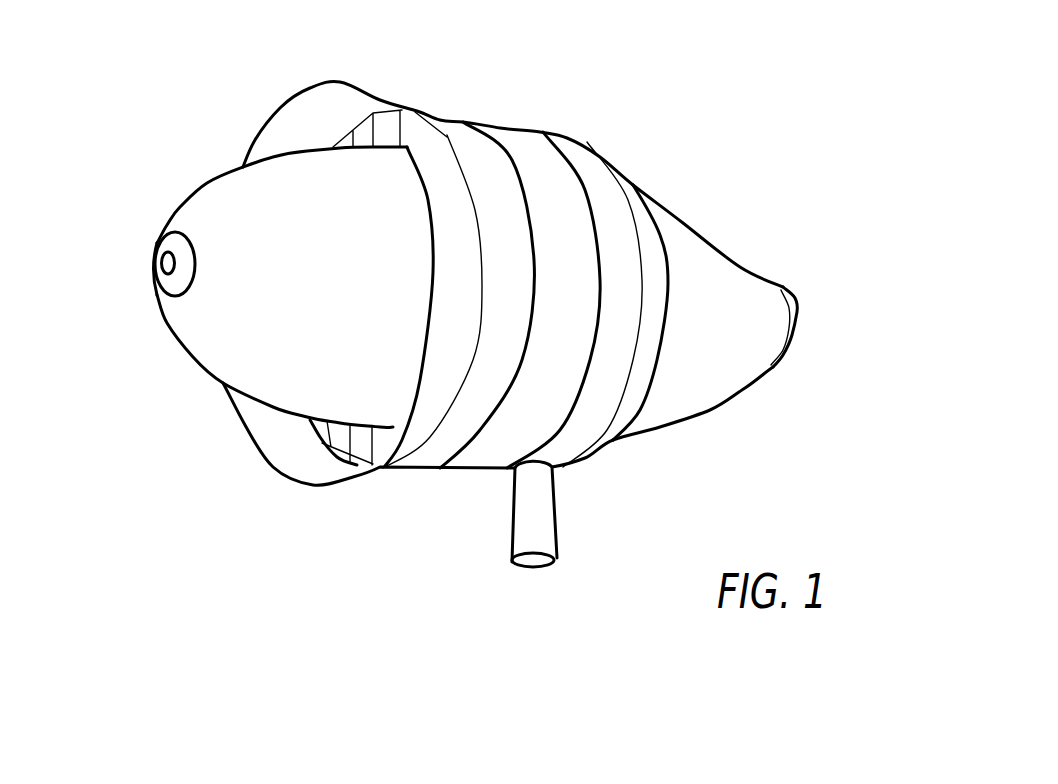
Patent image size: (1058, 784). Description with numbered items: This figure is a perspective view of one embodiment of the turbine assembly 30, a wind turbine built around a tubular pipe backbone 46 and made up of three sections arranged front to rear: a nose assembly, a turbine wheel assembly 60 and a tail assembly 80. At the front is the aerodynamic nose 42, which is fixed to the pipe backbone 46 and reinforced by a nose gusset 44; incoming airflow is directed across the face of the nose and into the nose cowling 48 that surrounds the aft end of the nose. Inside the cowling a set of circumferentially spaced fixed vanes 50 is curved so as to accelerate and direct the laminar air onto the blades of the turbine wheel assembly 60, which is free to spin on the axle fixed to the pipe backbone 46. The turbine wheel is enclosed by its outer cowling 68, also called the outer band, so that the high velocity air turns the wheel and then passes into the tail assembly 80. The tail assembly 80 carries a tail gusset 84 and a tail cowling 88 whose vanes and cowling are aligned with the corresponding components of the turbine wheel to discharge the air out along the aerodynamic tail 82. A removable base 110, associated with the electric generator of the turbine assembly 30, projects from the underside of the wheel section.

The turbine assembly 30 is at (515, 95).
The aerodynamic nose 42 is at (220, 337).
The nose gusset 44 is at (175, 285).
The pipe backbone 46 is at (168, 263).
The nose cowling 48 is at (440, 132).
The fixed vanes 50 is at (373, 132).
The turbine wheel assembly 60 is at (467, 487).
The outer cowling 68 is at (530, 177).
The tail assembly 80 is at (770, 210).
The aerodynamic tail 82 is at (708, 367).
The tail gusset 84 is at (795, 323).
The tail cowling 88 is at (647, 233).
The removable base 110 is at (533, 508).